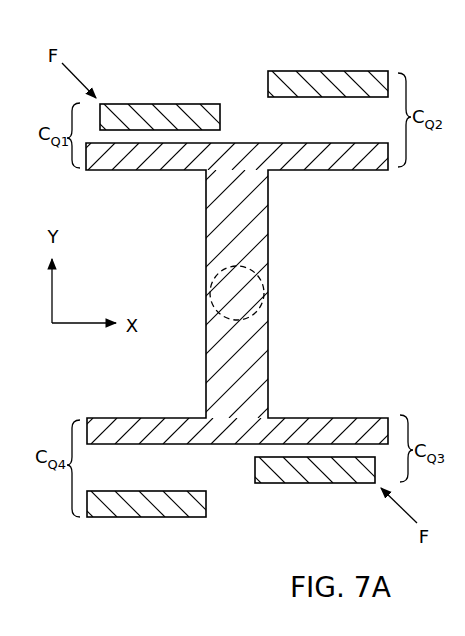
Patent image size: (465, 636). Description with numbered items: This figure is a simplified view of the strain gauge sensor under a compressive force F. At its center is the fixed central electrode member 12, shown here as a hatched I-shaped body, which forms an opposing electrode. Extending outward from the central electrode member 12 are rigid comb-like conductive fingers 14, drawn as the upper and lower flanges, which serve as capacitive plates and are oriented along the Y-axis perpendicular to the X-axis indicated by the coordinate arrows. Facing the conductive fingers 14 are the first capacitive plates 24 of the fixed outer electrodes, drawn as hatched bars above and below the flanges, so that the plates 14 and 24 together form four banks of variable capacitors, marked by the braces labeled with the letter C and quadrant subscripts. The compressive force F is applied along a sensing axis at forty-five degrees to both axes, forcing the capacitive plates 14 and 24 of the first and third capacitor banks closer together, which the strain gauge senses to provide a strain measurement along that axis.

The central electrode member 12 is at (263, 225).
The conductive fingers 14 is at (133, 170).
The first capacitive plates 24 is at (167, 104).